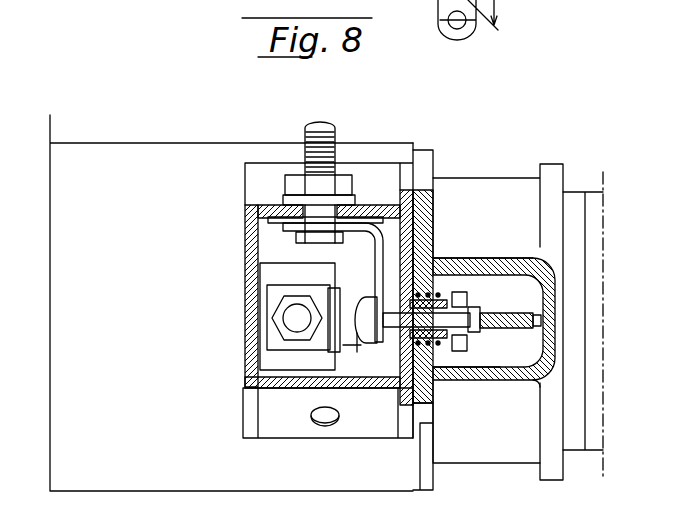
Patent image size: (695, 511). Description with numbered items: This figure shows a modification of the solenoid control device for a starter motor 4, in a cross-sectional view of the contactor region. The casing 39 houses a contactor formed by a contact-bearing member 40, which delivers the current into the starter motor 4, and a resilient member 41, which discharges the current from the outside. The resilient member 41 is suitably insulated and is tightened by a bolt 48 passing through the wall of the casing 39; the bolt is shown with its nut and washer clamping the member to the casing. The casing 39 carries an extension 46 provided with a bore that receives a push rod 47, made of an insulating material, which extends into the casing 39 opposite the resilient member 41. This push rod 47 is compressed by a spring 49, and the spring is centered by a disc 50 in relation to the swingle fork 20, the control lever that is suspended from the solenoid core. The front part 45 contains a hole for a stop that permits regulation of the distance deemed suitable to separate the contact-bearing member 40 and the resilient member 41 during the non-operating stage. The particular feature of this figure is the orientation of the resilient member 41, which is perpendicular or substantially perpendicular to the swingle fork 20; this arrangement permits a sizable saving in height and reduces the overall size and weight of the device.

The starter motor 4 is at (95, 200).
The swingle fork 20 is at (513, 330).
The casing 39 is at (280, 388).
The contact-bearing member 40 is at (260, 347).
The resilient member 41 is at (363, 298).
The front part 45 is at (478, 197).
The extension 46 is at (444, 340).
The push rod 47 is at (390, 343).
The bolt 48 is at (303, 134).
The spring 49 is at (442, 295).
The disc 50 is at (468, 293).